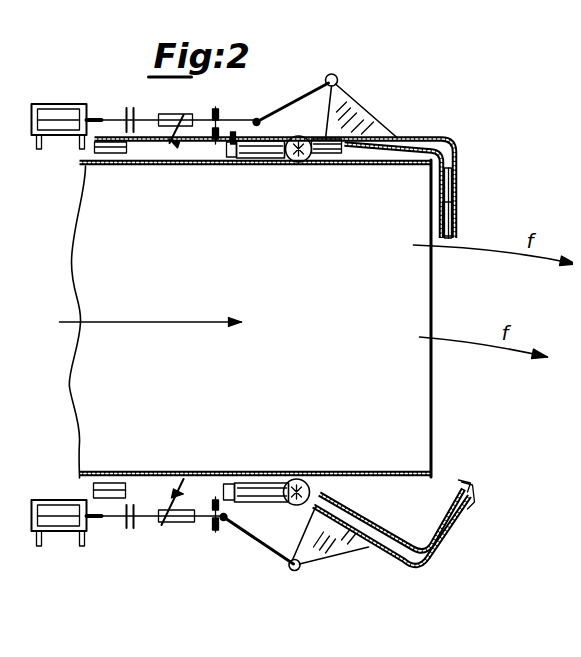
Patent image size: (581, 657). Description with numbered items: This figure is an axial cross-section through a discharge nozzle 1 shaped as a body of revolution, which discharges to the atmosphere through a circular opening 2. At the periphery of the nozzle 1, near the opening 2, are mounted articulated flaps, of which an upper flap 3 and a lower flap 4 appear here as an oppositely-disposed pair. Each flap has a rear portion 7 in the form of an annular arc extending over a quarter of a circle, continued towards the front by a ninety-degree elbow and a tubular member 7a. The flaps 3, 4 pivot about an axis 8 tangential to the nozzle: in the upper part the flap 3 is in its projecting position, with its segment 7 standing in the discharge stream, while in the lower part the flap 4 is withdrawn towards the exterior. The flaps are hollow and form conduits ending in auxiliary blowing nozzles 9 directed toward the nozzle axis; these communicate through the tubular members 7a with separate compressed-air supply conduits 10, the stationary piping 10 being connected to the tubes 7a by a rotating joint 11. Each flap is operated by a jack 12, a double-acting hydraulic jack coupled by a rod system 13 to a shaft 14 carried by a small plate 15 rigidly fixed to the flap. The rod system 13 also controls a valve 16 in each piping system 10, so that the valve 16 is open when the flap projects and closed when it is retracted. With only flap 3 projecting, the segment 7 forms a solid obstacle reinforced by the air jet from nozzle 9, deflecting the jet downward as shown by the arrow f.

The nozzle 1 is at (386, 476).
The circular opening 2 is at (433, 418).
The articulated flap 3 is at (446, 136).
The articulated flap 4 is at (443, 584).
The rear portion 7 is at (456, 192).
The tubular member 7a is at (421, 134).
The axis 8 is at (296, 137).
The auxiliary nozzle 9 is at (452, 233).
The supply conduit 10 is at (92, 148).
The rotating joint 11 is at (298, 161).
The jack 12 is at (58, 102).
The rod system 13 is at (234, 118).
The shaft 14 is at (336, 80).
The small plate 15 is at (343, 128).
The valve 16 is at (180, 144).